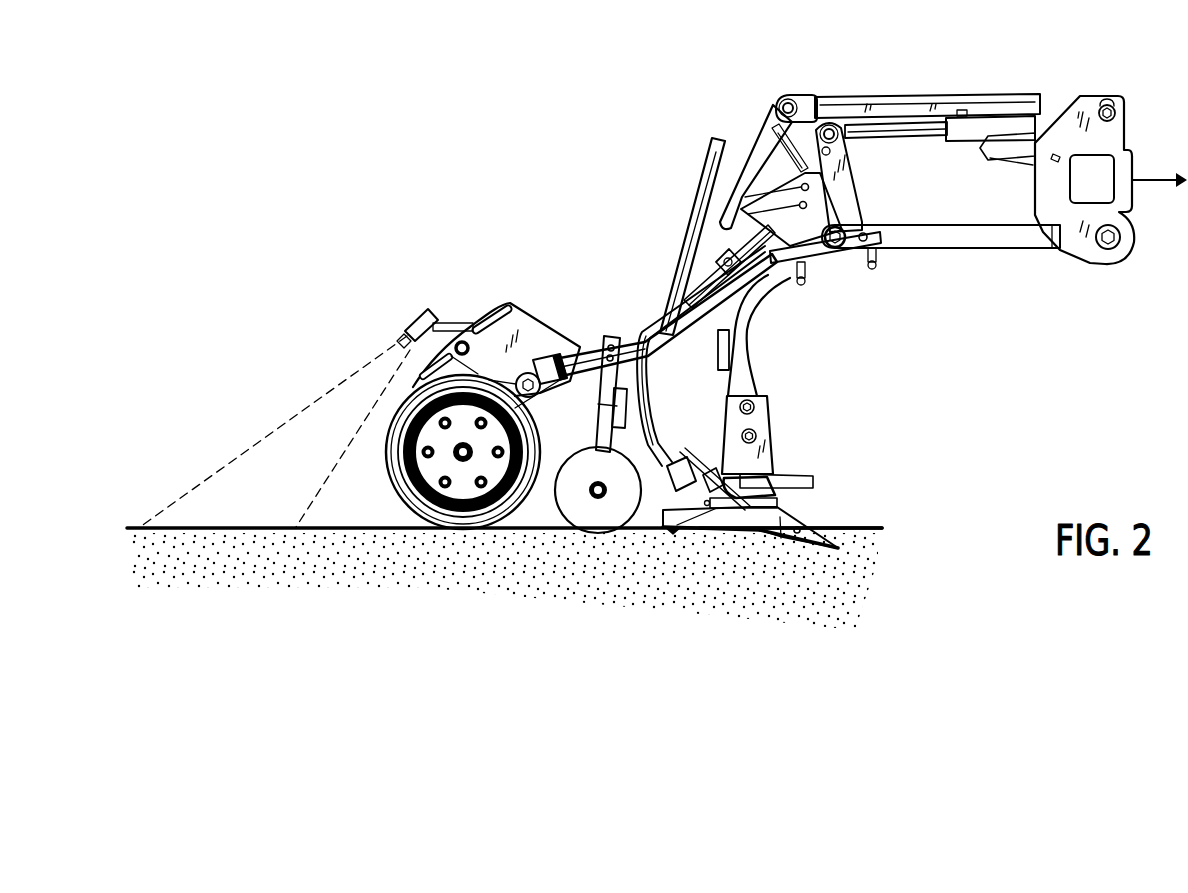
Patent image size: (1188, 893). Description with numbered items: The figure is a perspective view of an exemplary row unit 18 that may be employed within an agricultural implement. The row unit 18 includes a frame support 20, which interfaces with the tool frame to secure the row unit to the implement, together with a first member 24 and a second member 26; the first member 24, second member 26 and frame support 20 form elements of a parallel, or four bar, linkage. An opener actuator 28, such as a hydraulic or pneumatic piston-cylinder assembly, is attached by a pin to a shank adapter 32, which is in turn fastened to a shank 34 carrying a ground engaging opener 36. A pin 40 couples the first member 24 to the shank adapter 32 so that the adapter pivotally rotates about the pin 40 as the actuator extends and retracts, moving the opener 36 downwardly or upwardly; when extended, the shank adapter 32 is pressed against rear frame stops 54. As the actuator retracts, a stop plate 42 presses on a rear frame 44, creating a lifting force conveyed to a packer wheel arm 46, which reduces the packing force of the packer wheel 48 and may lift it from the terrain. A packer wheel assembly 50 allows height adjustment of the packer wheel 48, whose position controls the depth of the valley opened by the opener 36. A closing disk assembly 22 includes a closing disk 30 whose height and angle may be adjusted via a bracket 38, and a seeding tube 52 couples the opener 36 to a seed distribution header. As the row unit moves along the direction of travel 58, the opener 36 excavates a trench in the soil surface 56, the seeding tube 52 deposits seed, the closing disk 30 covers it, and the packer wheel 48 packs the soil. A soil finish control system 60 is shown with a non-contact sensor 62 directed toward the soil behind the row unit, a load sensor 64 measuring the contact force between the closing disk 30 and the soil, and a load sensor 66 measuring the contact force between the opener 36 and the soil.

The row unit 18 is at (494, 84).
The frame support 20 is at (1115, 100).
The closing disk assembly 22 is at (567, 545).
The first member 24 is at (943, 240).
The second member 26 is at (888, 100).
The opener actuator 28 is at (992, 120).
The closing disk 30 is at (603, 513).
The shank adapter 32 is at (846, 190).
The shank 34 is at (748, 372).
The opener 36 is at (790, 504).
The bracket 38 is at (606, 398).
The pin 40 is at (838, 250).
The stop plate 42 is at (772, 272).
The rear frame 44 is at (770, 146).
The packer wheel arm 46 is at (638, 344).
The packer wheel 48 is at (396, 398).
The packer wheel assembly 50 is at (493, 340).
The seeding tube 52 is at (712, 157).
The rear frame stops 54 is at (720, 222).
The soil surface 56 is at (856, 534).
The direction of travel 58 is at (1154, 178).
The soil finish control system 60 is at (541, 250).
The non-contact sensor 62 is at (418, 312).
The load sensor 64 is at (628, 408).
The load sensor 66 is at (718, 355).